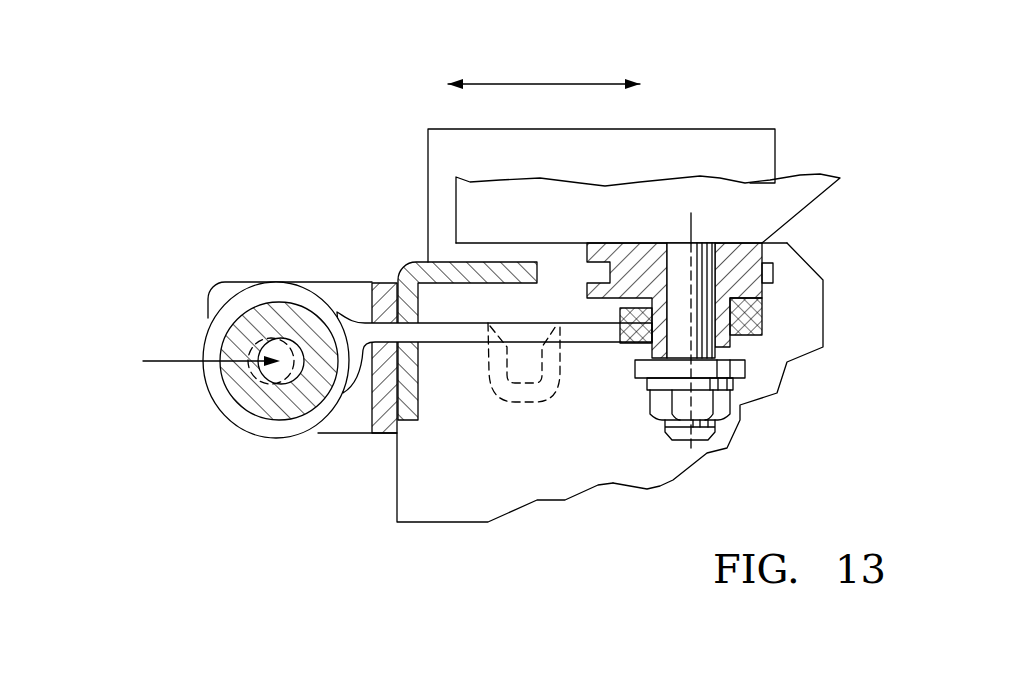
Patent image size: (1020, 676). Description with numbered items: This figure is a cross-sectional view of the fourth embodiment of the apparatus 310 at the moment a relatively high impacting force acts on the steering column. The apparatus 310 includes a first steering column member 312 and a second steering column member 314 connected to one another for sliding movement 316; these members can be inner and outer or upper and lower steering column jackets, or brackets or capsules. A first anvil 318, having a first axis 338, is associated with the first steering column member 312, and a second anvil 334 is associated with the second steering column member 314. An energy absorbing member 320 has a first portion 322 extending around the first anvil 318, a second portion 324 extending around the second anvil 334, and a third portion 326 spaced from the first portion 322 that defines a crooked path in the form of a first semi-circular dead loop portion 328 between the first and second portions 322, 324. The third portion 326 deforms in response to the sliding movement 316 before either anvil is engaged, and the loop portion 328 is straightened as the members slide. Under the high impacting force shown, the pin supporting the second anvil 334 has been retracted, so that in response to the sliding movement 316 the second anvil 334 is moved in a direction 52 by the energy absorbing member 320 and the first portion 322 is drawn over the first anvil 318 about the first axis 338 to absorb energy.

The direction 52 is at (183, 360).
The apparatus 310 is at (291, 544).
The first steering column member 312 is at (773, 243).
The second steering column member 314 is at (408, 267).
The sliding movement 316 is at (515, 82).
The first anvil 318 is at (740, 380).
The energy absorbing member 320 is at (602, 360).
The first portion 322 is at (757, 340).
The second portion 324 is at (267, 437).
The third portion 326 is at (512, 416).
The first semi-circular dead loop portion 328 is at (545, 400).
The second anvil 334 is at (242, 398).
The first axis 338 is at (693, 225).